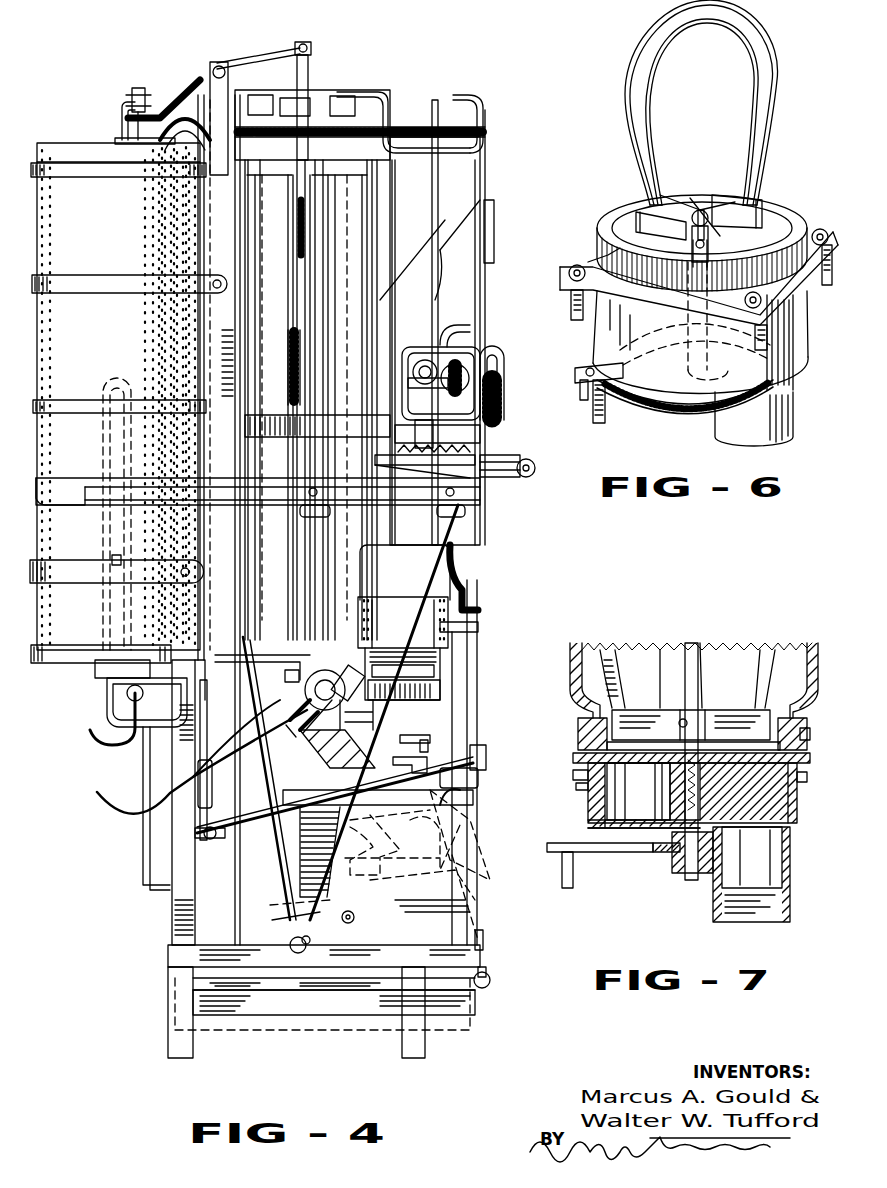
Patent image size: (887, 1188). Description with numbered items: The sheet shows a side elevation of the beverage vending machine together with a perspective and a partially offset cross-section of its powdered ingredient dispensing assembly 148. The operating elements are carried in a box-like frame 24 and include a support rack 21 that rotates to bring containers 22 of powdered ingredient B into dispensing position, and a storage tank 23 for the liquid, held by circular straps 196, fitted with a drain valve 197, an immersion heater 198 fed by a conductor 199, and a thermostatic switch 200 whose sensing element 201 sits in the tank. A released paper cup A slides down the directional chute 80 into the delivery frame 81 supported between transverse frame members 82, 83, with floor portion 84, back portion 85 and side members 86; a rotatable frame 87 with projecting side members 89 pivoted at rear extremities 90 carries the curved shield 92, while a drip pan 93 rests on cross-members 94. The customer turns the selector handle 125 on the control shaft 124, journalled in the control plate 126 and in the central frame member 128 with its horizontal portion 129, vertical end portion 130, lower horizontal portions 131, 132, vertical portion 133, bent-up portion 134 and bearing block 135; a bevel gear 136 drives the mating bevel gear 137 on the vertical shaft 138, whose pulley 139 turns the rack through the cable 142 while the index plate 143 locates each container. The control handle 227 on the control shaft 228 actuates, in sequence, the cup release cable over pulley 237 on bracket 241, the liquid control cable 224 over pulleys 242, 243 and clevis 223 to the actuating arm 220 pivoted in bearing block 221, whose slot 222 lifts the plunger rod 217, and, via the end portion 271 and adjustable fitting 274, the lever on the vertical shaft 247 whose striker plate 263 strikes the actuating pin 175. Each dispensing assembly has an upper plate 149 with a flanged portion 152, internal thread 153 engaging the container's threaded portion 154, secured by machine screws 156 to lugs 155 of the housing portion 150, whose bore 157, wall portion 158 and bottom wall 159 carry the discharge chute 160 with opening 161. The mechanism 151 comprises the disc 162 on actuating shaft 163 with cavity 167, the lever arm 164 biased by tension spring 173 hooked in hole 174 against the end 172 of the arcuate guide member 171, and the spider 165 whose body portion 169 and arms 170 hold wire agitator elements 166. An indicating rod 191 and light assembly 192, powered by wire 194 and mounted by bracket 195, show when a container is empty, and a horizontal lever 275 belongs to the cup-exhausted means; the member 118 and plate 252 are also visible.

In FIG. 4, the support rack 21 is at (407, 186).
In FIG. 4, the container 22 is at (408, 589).
In FIG. 7, the container 22 is at (570, 672).
In FIG. 4, the storage tank 23 is at (128, 237).
In FIG. 4, the frame 24 is at (163, 928).
In FIG. 4, the directional chute 80 is at (312, 850).
In FIG. 4, the delivery frame 81 is at (278, 883).
In FIG. 4, the transverse frame member 82 is at (481, 804).
In FIG. 4, the transverse frame member 83 is at (482, 980).
In FIG. 4, the floor portion 84 is at (482, 931).
In FIG. 4, the back portion 85 is at (278, 840).
In FIG. 4, the side members 86 is at (475, 845).
In FIG. 4, the vertically rotatable frame 87 is at (488, 887).
In FIG. 4, the projecting side members 89 is at (289, 900).
In FIG. 4, the rear extremities 90 is at (278, 921).
In FIG. 4, the curved shield 92 is at (475, 858).
In FIG. 4, the drip pan 93 is at (477, 1007).
In FIG. 4, the cross-members 94 is at (286, 1030).
In FIG. 4, the paper cup A is at (401, 835).
In FIG. 4, the powdered ingredient B is at (442, 675).
In FIG. 4, the support 118 is at (460, 611).
In FIG. 4, the control shaft 124 is at (471, 370).
In FIG. 4, the selector handle 125 is at (504, 372).
In FIG. 4, the control plate 126 is at (482, 446).
In FIG. 4, the central frame member 128 is at (494, 163).
In FIG. 4, the horizontal forwardly extending portion 129 is at (383, 88).
In FIG. 4, the depending vertical end portion 130 is at (487, 194).
In FIG. 4, the horizontal portion 131 is at (440, 252).
In FIG. 4, the horizontal portion 132 is at (482, 429).
In FIG. 4, the vertical portion 133 is at (399, 301).
In FIG. 4, the bent-up vertical portion 134 is at (505, 395).
In FIG. 4, the bearing block 135 is at (466, 373).
In FIG. 4, the bevel gear 136 is at (448, 396).
In FIG. 4, the mating bevel gear 137 is at (473, 331).
In FIG. 4, the vertical shaft 138 is at (439, 196).
In FIG. 4, the pulley 139 is at (472, 127).
In FIG. 4, the interconnecting cable 142 is at (343, 118).
In FIG. 4, the index plate 143 is at (311, 76).
In FIG. 6, the dispensing assembly 148 is at (818, 196).
In FIG. 6, the upper plate 149 is at (590, 250).
In FIG. 6, the housing portion 150 is at (811, 343).
In FIG. 6, the dispensing and agitating mechanism 151 is at (664, 133).
In FIG. 7, the dispensing and agitating mechanism 151 is at (708, 644).
In FIG. 6, the raised flanged portion 152 is at (601, 225).
In FIG. 7, the raised flanged portion 152 is at (576, 734).
In FIG. 6, the internal thread 153 is at (621, 209).
In FIG. 7, the externally threaded portion 154 is at (580, 756).
In FIG. 6, the lugs 155 is at (573, 294).
In FIG. 6, the machine screws 156 is at (569, 268).
In FIG. 7, the cylindrical bore 157 is at (797, 818).
In FIG. 7, the circular wall portion 158 is at (588, 808).
In FIG. 7, the closed bottom wall portion 159 is at (591, 830).
In FIG. 7, the discharge chute 160 is at (717, 898).
In FIG. 7, the central opening 161 is at (791, 869).
In FIG. 7, the disc 162 is at (580, 784).
In FIG. 7, the actuating shaft 163 is at (689, 876).
In FIG. 6, the lever arm 164 is at (625, 343).
In FIG. 7, the lever arm 164 is at (604, 852).
In FIG. 6, the spider 165 is at (646, 190).
In FIG. 7, the spider 165 is at (714, 700).
In FIG. 6, the wire agitator elements 166 is at (745, 74).
In FIG. 6, the cavity 167 is at (679, 281).
In FIG. 7, the cavity 167 is at (658, 797).
In FIG. 6, the central body portion 169 is at (712, 196).
In FIG. 6, the arms 170 is at (727, 175).
In FIG. 6, the arcuate guide member 171 is at (705, 410).
In FIG. 6, the end 172 is at (605, 367).
In FIG. 6, the tension spring 173 is at (627, 414).
In FIG. 6, the hole 174 is at (595, 397).
In FIG. 4, the actuating pin 175 is at (424, 744).
In FIG. 6, the actuating pin 175 is at (588, 420).
In FIG. 7, the actuating pin 175 is at (573, 886).
In FIG. 4, the indicating rod 191 is at (479, 559).
In FIG. 4, the light assembly 192 is at (343, 672).
In FIG. 4, the wire 194 is at (125, 817).
In FIG. 4, the bracket 195 is at (265, 781).
In FIG. 4, the circular straps 196 is at (111, 294).
In FIG. 4, the drain valve 197 is at (226, 690).
In FIG. 4, the immersion heater 198 is at (102, 469).
In FIG. 4, the conductor 199 is at (89, 733).
In FIG. 4, the thermostatic switch 200 is at (82, 696).
In FIG. 4, the sensing element 201 is at (113, 604).
In FIG. 4, the rod 217 is at (138, 88).
In FIG. 4, the actuating arm 220 is at (277, 54).
In FIG. 4, the bearing block 221 is at (220, 58).
In FIG. 4, the slot 222 is at (167, 116).
In FIG. 4, the clevis 223 is at (315, 52).
In FIG. 4, the control cable 224 is at (306, 280).
In FIG. 4, the control handle 227 is at (118, 132).
In FIG. 4, the control shaft 228 is at (485, 490).
In FIG. 4, the pulley 237 is at (292, 944).
In FIG. 4, the pulley bracket 241 is at (257, 668).
In FIG. 4, the pulley 242 is at (445, 517).
In FIG. 4, the pulley 243 is at (330, 516).
In FIG. 4, the vertical shaft 247 is at (478, 649).
In FIG. 4, the plate 252 is at (495, 230).
In FIG. 4, the striker plate 263 is at (384, 803).
In FIG. 4, the end portion 271 is at (258, 812).
In FIG. 4, the adjustable fitting 274 is at (212, 840).
In FIG. 4, the horizontal lever 275 is at (458, 96).